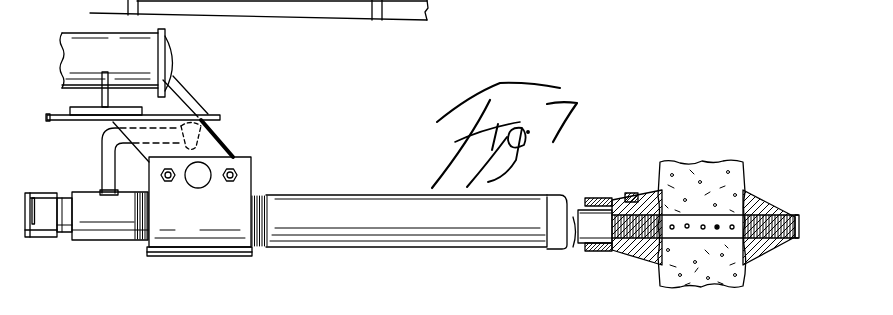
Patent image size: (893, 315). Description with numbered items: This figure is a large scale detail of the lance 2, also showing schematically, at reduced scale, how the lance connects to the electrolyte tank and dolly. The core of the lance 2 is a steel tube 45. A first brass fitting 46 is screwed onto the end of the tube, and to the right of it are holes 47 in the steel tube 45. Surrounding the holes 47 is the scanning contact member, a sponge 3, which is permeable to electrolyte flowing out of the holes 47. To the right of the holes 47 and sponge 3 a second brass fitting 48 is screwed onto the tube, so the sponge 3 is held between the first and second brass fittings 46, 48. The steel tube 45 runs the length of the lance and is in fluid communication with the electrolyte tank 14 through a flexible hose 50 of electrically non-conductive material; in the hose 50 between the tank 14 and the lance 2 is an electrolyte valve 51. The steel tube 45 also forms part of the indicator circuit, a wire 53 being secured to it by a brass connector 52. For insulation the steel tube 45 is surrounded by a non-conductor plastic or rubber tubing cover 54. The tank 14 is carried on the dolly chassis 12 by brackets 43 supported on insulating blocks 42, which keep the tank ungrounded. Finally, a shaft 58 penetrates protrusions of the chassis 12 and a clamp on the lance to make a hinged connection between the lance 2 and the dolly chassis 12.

The lance 2 is at (336, 246).
The sponge 3 is at (716, 165).
The dolly chassis 12 is at (220, 117).
The electrolyte tank 14 is at (73, 33).
The insulating block 42 is at (80, 117).
The bracket 43 is at (100, 97).
The steel tube 45 is at (65, 237).
The first brass fitting 46 is at (623, 257).
The holes 47 is at (693, 218).
The second brass fitting 48 is at (760, 200).
The flexible hose 50 is at (100, 152).
The electrolyte valve 51 is at (205, 138).
The brass connector 52 is at (43, 238).
The wire 53 is at (36, 193).
The non-conductor tubing cover 54 is at (368, 195).
The shaft 58 is at (200, 188).